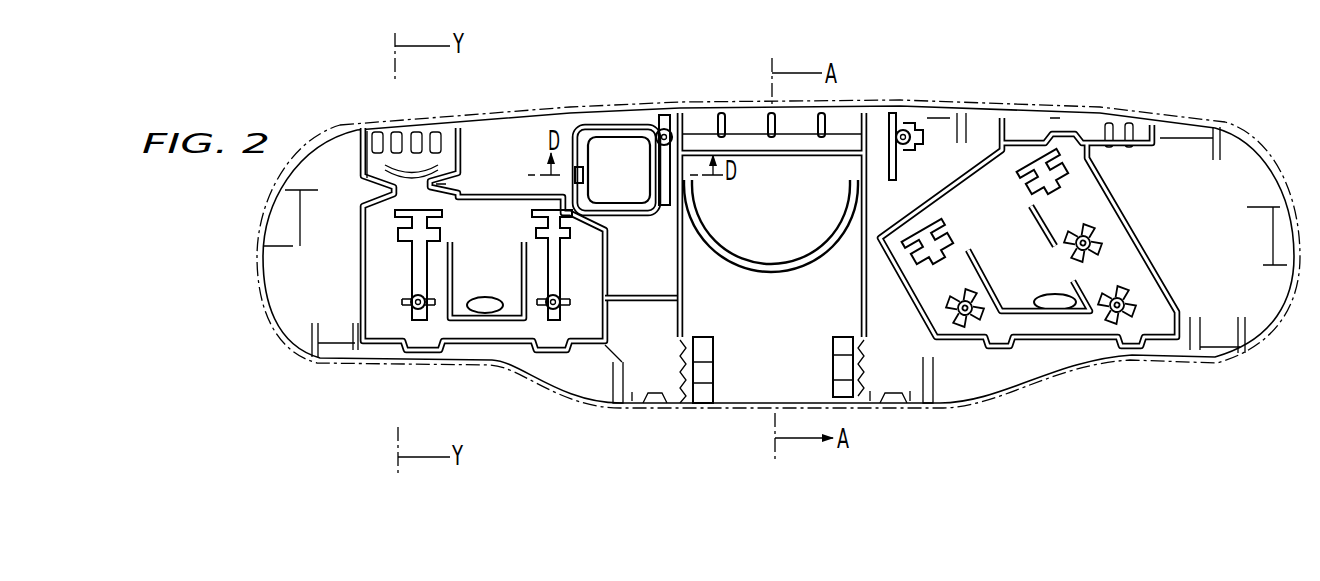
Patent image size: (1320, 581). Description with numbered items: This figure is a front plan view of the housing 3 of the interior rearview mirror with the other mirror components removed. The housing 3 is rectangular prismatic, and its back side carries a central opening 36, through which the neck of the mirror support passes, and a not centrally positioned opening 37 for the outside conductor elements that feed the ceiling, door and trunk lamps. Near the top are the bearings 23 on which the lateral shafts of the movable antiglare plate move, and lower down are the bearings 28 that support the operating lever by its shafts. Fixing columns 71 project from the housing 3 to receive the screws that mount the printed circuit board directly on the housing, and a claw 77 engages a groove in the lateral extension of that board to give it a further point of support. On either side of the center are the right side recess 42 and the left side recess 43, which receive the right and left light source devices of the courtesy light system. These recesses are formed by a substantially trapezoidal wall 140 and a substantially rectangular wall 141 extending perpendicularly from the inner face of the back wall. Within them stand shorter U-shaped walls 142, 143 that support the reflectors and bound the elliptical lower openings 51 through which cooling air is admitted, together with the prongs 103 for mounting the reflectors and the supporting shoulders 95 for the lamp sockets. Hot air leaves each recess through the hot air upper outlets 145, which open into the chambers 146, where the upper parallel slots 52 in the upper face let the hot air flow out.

The housing 3 is at (318, 378).
The bearings 23 is at (835, 127).
The bearings 28 is at (837, 345).
The central opening 36 is at (783, 241).
The not centrally positioned opening 37 is at (632, 177).
The right side recess 42 is at (1150, 75).
The left side recess 43 is at (415, 78).
The lower openings 51 is at (488, 310).
The upper parallel slots 52 is at (432, 133).
The fixing columns 71 is at (668, 118).
The claw 77 is at (577, 168).
The supporting shoulders 95 is at (403, 243).
The prongs 103 is at (423, 318).
The wall 140 is at (1137, 247).
The wall 141 is at (608, 265).
The U-shaped wall 142 is at (1034, 314).
The U-shaped wall 143 is at (495, 318).
The hot air upper outlets 145 is at (442, 186).
The chambers 146 is at (367, 131).